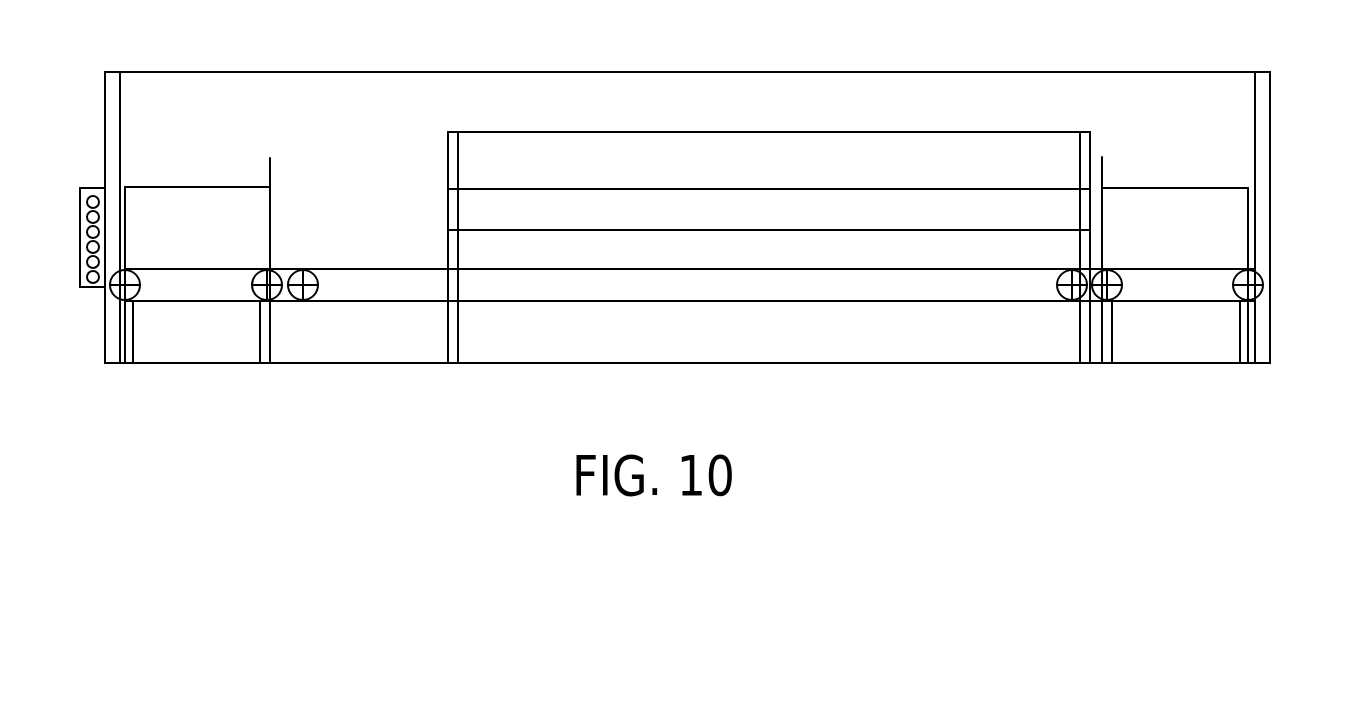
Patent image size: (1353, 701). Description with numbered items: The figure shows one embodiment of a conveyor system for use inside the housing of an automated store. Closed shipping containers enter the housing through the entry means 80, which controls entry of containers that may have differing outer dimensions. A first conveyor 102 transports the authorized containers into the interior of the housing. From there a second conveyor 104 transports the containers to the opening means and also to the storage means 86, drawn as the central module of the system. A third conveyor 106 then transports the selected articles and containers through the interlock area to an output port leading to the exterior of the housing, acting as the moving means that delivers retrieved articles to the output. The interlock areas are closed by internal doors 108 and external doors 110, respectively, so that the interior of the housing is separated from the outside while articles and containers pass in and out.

The entry means 80 is at (173, 186).
The storage means 86 is at (757, 117).
The first conveyor 102 is at (225, 268).
The second conveyor 104 is at (385, 268).
The third conveyor 106 is at (1137, 262).
The internal door 108 is at (272, 168).
The external door 110 is at (125, 215).